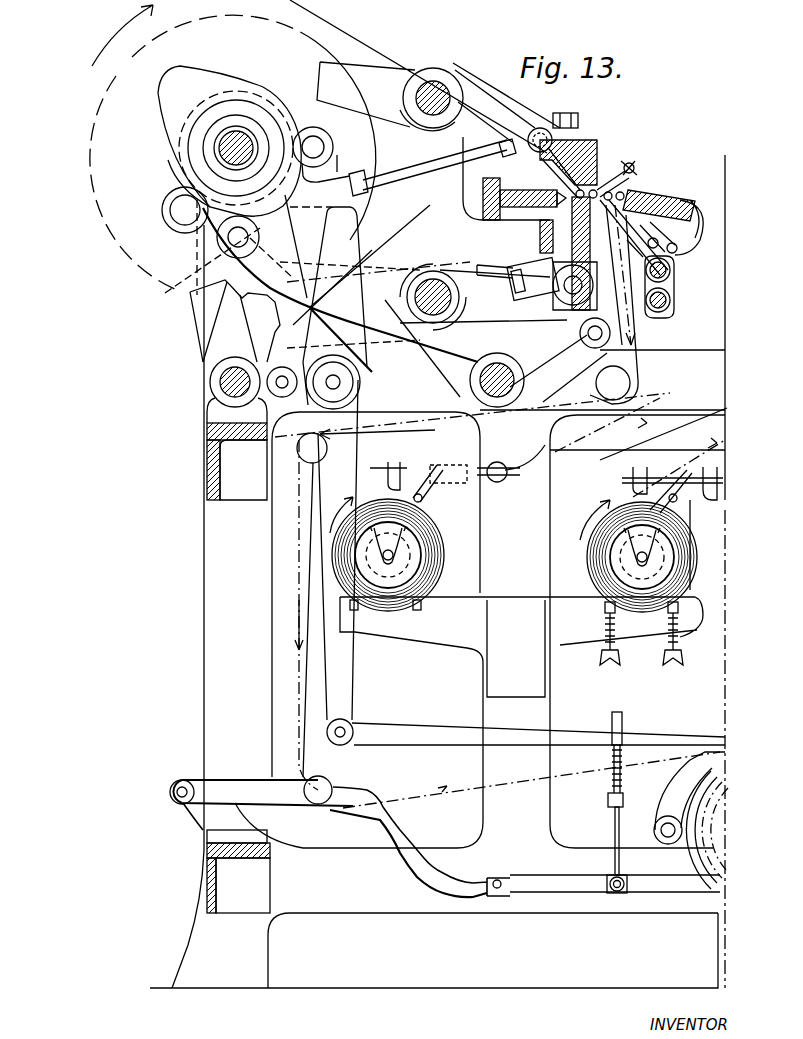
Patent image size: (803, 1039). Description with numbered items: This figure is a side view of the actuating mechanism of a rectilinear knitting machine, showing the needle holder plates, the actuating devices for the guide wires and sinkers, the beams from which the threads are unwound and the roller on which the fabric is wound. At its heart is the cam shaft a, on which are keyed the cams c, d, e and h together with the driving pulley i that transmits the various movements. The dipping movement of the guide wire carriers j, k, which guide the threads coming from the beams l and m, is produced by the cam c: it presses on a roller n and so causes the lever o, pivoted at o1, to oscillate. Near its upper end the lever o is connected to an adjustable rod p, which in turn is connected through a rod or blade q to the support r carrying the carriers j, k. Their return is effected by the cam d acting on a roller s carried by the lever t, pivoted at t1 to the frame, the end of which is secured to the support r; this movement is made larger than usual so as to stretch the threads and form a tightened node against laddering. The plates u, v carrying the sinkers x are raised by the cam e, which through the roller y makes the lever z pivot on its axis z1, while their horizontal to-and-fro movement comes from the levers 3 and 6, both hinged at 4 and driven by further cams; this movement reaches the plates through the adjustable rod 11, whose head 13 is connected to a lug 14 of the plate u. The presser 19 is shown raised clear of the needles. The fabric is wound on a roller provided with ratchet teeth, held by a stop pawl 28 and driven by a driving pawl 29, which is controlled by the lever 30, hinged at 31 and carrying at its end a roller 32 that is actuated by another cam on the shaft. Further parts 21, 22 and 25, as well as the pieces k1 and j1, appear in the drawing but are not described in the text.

The driving pulley i is at (97, 93).
The cam d is at (197, 88).
The cam e is at (183, 172).
The cam shaft a is at (222, 141).
The cam c is at (247, 88).
The cam h is at (283, 110).
The roller y is at (170, 222).
The roller s is at (200, 243).
The lever 3 is at (190, 304).
The lever 6 is at (233, 330).
The hinge 4 is at (218, 382).
The pivot o1 is at (268, 390).
The hinge 31 is at (345, 378).
The roller n is at (332, 143).
The lever 21 is at (388, 78).
The pulley 22 is at (440, 95).
The adjustable rod p is at (423, 176).
The roller 32 is at (297, 222).
The lever o is at (336, 279).
The lever t is at (390, 267).
The pivot t1 is at (433, 280).
The adjustable rod 11 is at (505, 278).
The head 13 is at (535, 283).
The plate v is at (548, 230).
The sinkers x is at (557, 156).
The presser 19 is at (585, 140).
The rod or blade q is at (597, 146).
The pin k1 is at (633, 163).
The pin j1 is at (640, 185).
The guide wire carrier j is at (663, 200).
The guide wire carrier k is at (695, 211).
The support r is at (682, 246).
The plate u is at (670, 298).
The lug 14 is at (617, 265).
The lever z is at (430, 353).
The axis z1 is at (500, 380).
The beam m is at (335, 542).
The beam l is at (683, 582).
The rod 25 is at (293, 646).
The lever 30 is at (340, 684).
The driving pawl 29 is at (562, 738).
The stop pawl 28 is at (683, 800).